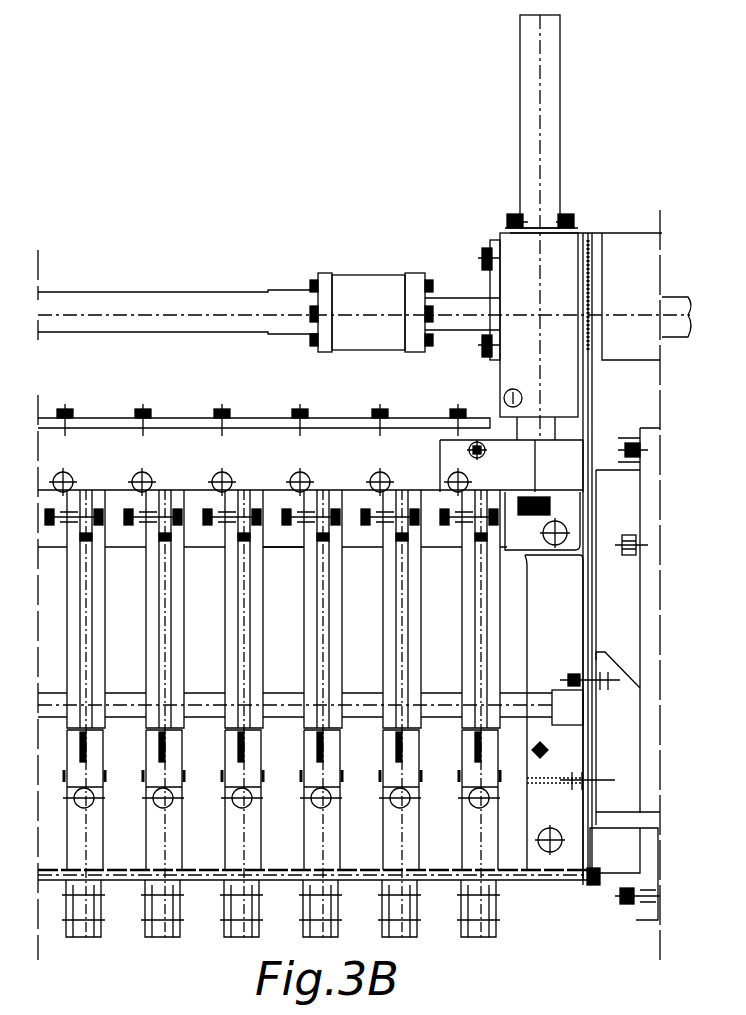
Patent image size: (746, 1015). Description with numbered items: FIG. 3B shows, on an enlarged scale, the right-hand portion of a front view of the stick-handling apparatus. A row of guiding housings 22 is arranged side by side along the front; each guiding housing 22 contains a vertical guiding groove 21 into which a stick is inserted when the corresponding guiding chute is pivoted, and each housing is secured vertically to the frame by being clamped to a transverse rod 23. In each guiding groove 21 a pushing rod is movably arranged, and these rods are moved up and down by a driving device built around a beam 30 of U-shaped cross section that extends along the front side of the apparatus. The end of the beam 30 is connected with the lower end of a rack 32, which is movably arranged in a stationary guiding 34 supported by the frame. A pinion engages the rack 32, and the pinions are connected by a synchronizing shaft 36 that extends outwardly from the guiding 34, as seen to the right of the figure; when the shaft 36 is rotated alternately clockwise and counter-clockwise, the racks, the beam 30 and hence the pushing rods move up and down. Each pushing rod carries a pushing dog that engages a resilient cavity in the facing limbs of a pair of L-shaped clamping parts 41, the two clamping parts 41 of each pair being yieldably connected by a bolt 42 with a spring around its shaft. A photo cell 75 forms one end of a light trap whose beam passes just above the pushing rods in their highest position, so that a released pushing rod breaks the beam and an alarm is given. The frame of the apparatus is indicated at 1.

The frame 1 is at (650, 500).
The vertical guiding groove 21 is at (86, 834).
The guiding housing 22 is at (310, 618).
The transverse rod 23 is at (362, 545).
The beam 30 is at (367, 400).
The rack 32 is at (522, 122).
The stationary guiding 34 is at (500, 236).
The synchronizing shaft 36 is at (686, 302).
The L-shaped clamping part 41 is at (90, 528).
The bolt 42 is at (120, 510).
The photo cell 75 is at (527, 376).